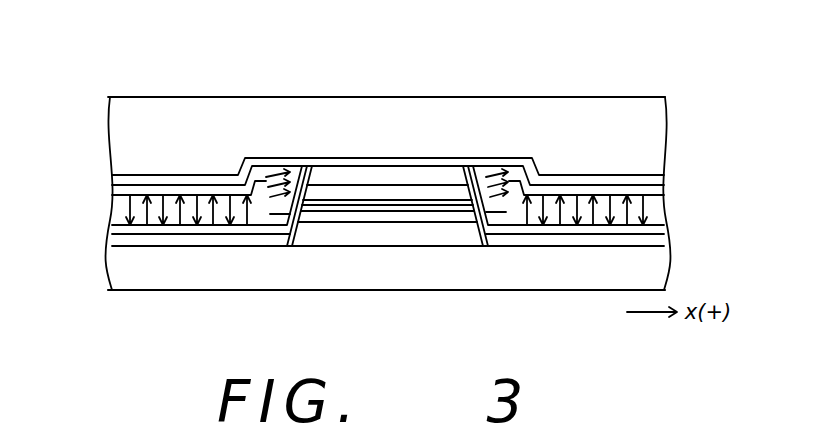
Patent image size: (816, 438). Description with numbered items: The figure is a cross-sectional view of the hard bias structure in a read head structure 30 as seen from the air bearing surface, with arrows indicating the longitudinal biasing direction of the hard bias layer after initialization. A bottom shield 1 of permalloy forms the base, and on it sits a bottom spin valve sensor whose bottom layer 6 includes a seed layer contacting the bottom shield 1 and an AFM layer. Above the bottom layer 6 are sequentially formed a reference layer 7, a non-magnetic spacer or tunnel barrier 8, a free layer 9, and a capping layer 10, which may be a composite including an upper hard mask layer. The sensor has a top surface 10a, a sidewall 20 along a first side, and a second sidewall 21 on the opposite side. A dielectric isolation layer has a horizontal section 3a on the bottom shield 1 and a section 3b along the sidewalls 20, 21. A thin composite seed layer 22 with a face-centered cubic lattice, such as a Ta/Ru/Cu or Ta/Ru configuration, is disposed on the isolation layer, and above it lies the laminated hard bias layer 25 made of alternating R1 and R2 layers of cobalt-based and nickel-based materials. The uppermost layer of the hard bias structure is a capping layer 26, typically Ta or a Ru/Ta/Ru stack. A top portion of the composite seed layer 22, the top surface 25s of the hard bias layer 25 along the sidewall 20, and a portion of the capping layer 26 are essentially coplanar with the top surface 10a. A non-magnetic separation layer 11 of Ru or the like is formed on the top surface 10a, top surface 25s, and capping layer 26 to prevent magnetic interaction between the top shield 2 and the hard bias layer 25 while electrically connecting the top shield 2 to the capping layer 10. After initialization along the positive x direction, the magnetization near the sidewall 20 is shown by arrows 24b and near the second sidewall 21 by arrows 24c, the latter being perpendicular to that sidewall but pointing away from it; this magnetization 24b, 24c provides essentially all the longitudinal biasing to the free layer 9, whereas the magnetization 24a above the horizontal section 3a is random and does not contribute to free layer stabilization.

The bottom shield 1 is at (118, 272).
The top shield 2 is at (643, 133).
The isolation layer section 3a is at (114, 240).
The isolation layer section 3b is at (297, 249).
The bottom layer 6 is at (397, 239).
The reference layer 7 is at (355, 217).
The non-magnetic spacer or tunnel barrier 8 is at (343, 197).
The free layer 9 is at (364, 192).
The capping layer 10 is at (393, 177).
The top surface 10a is at (371, 166).
The non-magnetic separation layer 11 is at (114, 176).
The sidewall 20 is at (312, 178).
The second sidewall 21 is at (459, 174).
The composite seed layer 22 is at (114, 229).
The magnetization 24a is at (205, 222).
The magnetization arrows 24b is at (274, 216).
The magnetization arrows 24c is at (505, 200).
The hard bias layer 25 is at (114, 205).
The top surface 25s is at (281, 168).
The capping layer 26 is at (114, 189).
The read head structure 30 is at (706, 82).